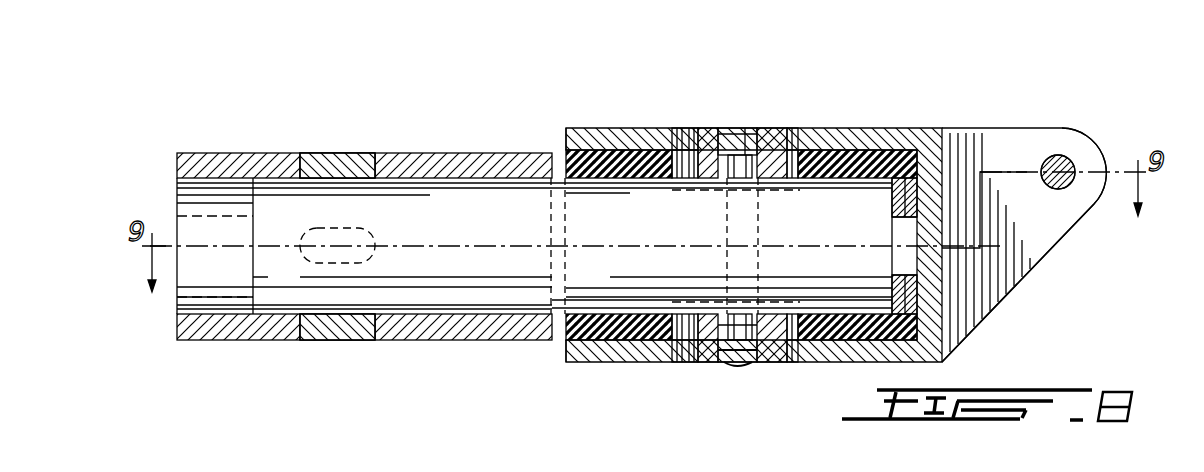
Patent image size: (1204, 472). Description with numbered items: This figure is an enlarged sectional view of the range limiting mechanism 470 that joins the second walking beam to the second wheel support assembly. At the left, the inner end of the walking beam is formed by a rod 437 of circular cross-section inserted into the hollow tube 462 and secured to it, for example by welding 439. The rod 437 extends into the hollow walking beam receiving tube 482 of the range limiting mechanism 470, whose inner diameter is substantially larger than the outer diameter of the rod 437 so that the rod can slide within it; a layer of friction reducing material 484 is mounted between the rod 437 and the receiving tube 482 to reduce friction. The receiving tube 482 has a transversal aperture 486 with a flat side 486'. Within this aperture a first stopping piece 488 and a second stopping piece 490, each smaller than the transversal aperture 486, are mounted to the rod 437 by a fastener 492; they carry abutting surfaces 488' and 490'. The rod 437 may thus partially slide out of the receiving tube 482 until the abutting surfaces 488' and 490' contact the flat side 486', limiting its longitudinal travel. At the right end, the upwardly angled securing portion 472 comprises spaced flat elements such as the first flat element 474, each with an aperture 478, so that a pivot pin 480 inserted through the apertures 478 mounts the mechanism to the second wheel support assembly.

The rod 437 is at (497, 280).
The weld 439 is at (340, 152).
The hollow tube 462 is at (400, 340).
The range limiting mechanism 470 is at (942, 82).
The upwardly angled securing portion 472 is at (1033, 294).
The first flat element 474 is at (1048, 218).
The aperture 478 is at (1056, 157).
The pivot pin 480 is at (1068, 163).
The walking beam receiving tube 482 is at (865, 120).
The layer of friction reducing material 484 is at (830, 338).
The transversal aperture 486 is at (719, 234).
The flat side 486' is at (649, 237).
The first stopping piece 488 is at (801, 211).
The abutting surface 488' is at (726, 211).
The second stopping piece 490 is at (754, 365).
The abutting surface 490' is at (726, 399).
The fastener 492 is at (762, 126).